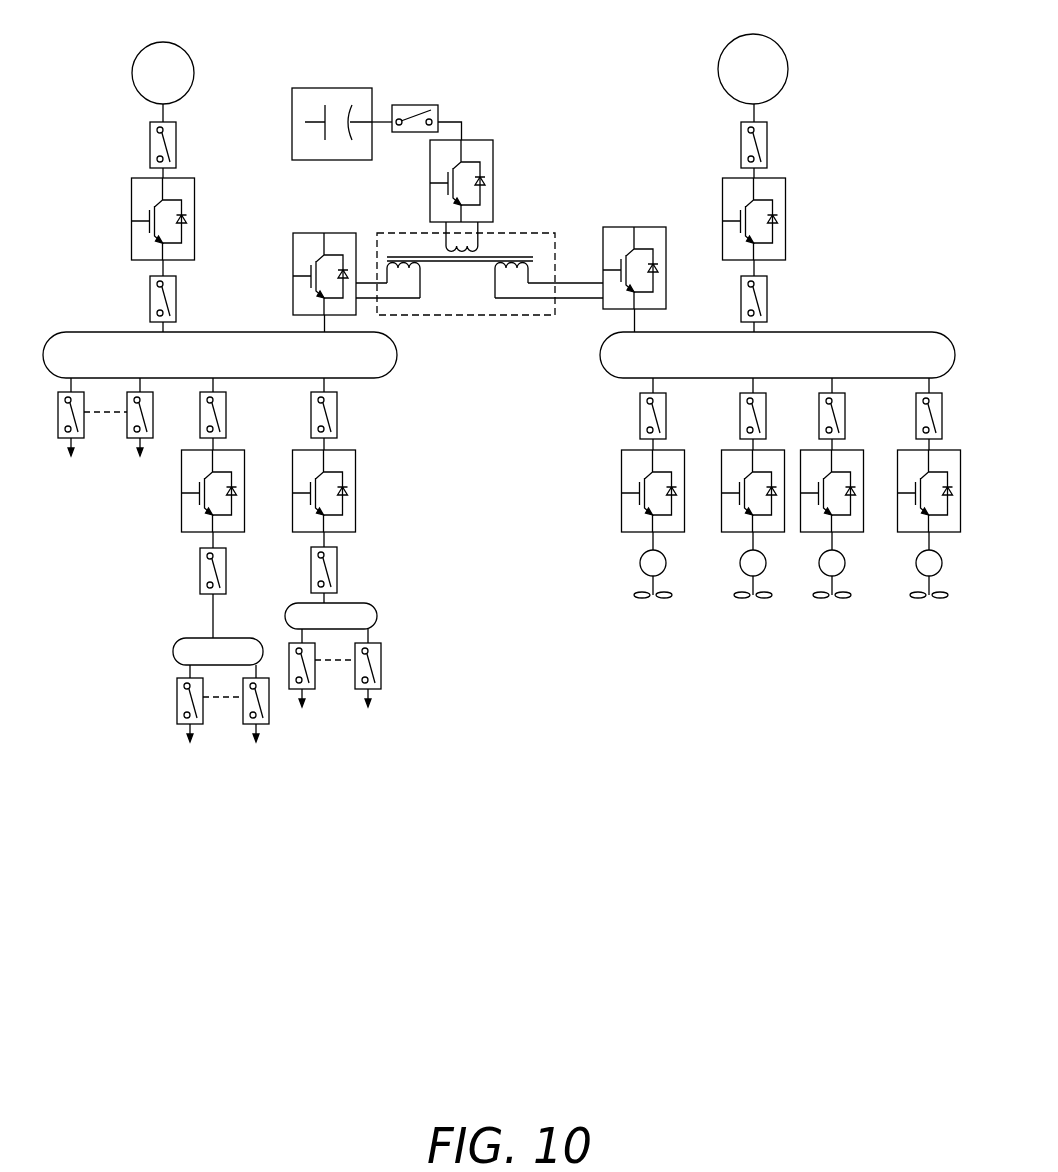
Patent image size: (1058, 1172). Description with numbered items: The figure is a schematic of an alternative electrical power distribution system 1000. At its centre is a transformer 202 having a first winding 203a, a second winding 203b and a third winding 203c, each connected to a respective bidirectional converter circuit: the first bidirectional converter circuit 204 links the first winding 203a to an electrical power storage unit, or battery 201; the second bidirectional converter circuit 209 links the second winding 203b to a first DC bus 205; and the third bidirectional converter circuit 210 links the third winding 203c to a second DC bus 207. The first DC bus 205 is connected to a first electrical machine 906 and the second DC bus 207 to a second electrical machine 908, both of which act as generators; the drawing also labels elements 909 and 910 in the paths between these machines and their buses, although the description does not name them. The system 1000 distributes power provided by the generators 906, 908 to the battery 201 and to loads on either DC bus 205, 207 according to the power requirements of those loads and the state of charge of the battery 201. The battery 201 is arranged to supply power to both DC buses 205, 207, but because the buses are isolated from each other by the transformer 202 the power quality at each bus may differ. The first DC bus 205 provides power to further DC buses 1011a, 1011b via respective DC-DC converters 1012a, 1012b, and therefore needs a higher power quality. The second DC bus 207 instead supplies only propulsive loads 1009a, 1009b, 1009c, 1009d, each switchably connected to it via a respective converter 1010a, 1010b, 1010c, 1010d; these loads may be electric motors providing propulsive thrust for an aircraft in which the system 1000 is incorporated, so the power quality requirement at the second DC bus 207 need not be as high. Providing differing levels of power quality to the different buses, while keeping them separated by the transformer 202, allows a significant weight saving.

The electrical power distribution system 1000 is at (856, 78).
The first electrical machine 906 is at (132, 73).
The power converter 909 is at (131, 215).
The battery 201 is at (292, 107).
The first bidirectional converter circuit 204 is at (480, 140).
The transformer 202 is at (494, 252).
The first winding 203a is at (472, 243).
The second winding 203b is at (432, 268).
The third winding 203c is at (527, 260).
The second bidirectional converter circuit 209 is at (293, 283).
The third bidirectional converter circuit 210 is at (658, 227).
The second electrical machine 908 is at (718, 66).
The power converter 910 is at (786, 212).
The first DC bus 205 is at (397, 362).
The second DC bus 207 is at (602, 350).
The DC-DC converter 1012a is at (181, 497).
The DC-DC converter 1012b is at (356, 492).
The further DC bus 1011a is at (173, 645).
The further DC bus 1011b is at (377, 612).
The converter 1010a is at (621, 494).
The converter 1010b is at (721, 523).
The converter 1010c is at (800, 523).
The converter 1010d is at (905, 533).
The propulsive load 1009a is at (640, 563).
The propulsive load 1009b is at (740, 565).
The propulsive load 1009c is at (819, 565).
The propulsive load 1009d is at (916, 565).